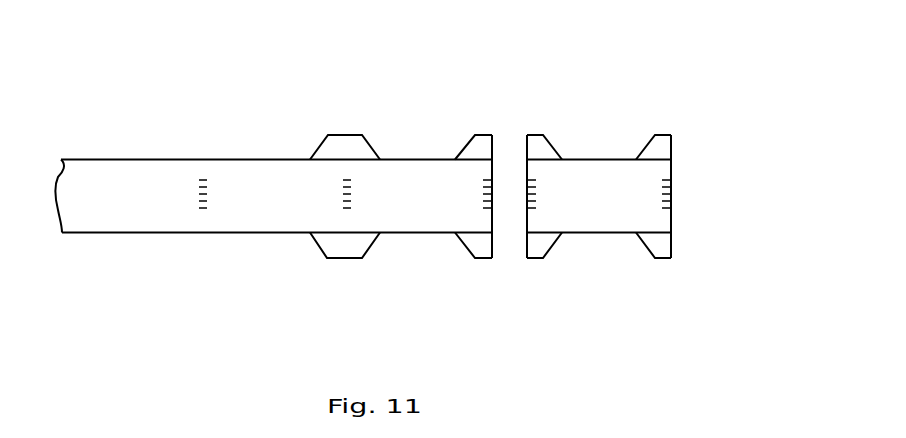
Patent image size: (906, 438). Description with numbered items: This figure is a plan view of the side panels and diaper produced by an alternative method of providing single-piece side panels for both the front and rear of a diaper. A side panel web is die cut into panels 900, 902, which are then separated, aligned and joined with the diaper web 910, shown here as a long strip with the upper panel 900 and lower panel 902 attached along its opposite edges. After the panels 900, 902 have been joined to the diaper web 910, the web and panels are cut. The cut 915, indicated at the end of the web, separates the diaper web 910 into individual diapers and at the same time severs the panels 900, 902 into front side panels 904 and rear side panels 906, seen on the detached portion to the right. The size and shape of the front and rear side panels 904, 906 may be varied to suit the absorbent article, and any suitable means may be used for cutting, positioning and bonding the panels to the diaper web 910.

The panel 900 is at (348, 140).
The panel 902 is at (340, 250).
The front side panels 904 is at (480, 140).
The rear side panels 906 is at (535, 140).
The diaper web 910 is at (147, 212).
The cut 915 is at (492, 170).